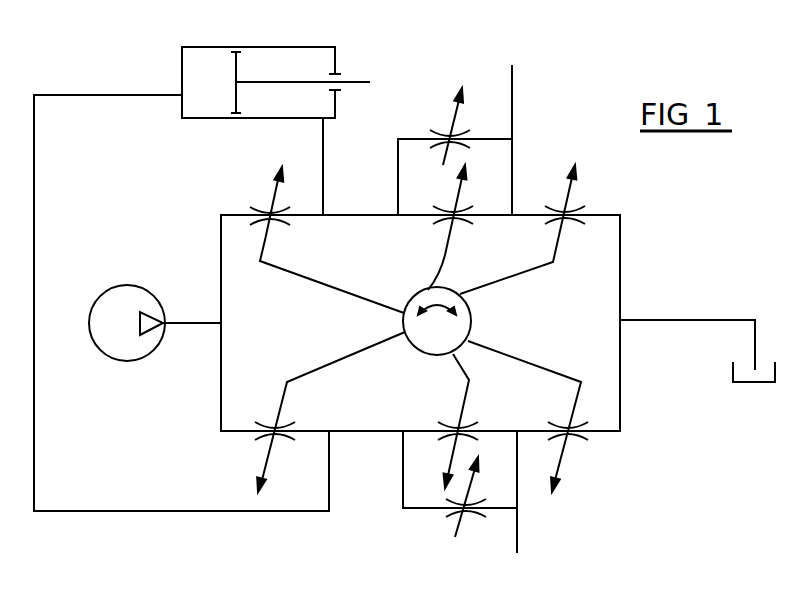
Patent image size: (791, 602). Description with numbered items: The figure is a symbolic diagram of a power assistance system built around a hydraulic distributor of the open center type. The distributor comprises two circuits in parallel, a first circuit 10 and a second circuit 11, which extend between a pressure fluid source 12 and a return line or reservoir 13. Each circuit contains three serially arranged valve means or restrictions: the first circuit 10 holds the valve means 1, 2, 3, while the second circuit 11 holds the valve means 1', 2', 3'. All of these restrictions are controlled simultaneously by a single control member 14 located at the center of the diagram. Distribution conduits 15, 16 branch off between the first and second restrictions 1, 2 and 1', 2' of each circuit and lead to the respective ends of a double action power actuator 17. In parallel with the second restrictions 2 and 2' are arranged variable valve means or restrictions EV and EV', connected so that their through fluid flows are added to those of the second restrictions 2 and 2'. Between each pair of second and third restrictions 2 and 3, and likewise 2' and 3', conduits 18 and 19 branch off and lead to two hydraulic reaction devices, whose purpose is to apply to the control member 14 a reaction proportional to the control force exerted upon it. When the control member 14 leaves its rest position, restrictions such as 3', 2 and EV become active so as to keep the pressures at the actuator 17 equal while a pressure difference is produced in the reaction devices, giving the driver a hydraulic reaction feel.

The first valve means 1 is at (327, 240).
The first valve means 1' is at (318, 412).
The second restriction 2 is at (450, 227).
The second restriction 2' is at (446, 421).
The third valve means 3 is at (529, 229).
The third valve means 3' is at (536, 416).
The first circuit 10 is at (401, 323).
The second circuit 11 is at (207, 377).
The pressure fluid source 12 is at (155, 323).
The return line or reservoir 13 is at (697, 351).
The control member 14 is at (437, 321).
The distribution conduit 15 is at (338, 166).
The distribution conduit 16 is at (181, 315).
The double action power actuator 17 is at (276, 71).
The conduit 18 is at (470, 140).
The conduit 19 is at (476, 501).
The variable valve means EV is at (445, 126).
The variable valve means EV' is at (448, 502).